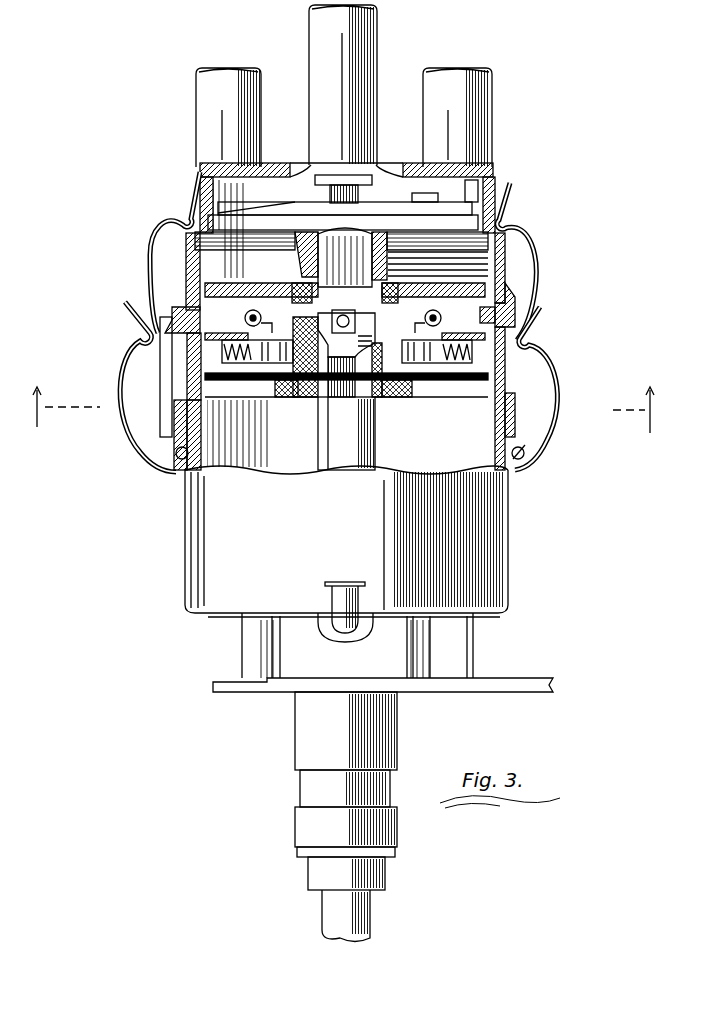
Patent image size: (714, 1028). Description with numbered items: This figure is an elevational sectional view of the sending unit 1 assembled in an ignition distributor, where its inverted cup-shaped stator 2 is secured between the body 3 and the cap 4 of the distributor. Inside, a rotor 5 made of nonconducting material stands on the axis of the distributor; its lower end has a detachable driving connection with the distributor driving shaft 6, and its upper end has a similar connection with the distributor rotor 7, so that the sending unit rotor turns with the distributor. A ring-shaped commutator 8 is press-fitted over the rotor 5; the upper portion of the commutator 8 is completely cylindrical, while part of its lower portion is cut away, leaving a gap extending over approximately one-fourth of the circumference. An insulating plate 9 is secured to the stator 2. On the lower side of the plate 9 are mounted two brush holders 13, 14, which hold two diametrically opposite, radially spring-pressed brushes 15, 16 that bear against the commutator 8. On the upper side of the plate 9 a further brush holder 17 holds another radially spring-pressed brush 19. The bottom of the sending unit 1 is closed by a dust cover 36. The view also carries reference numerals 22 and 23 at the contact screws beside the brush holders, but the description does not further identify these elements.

The sending unit 1 is at (148, 396).
The stator 2 is at (513, 403).
The body 3 is at (483, 538).
The cap 4 is at (495, 282).
The rotor 5 is at (377, 283).
The distributor driving shaft 6 is at (365, 447).
The distributor rotor 7 is at (300, 260).
The commutator 8 is at (322, 313).
The insulating plate 9 is at (197, 333).
The brush holder 13 is at (187, 363).
The brush holder 14 is at (493, 357).
The brush 15 is at (225, 355).
The brush 16 is at (428, 357).
The brush holder 17 is at (356, 308).
The brush 19 is at (352, 340).
The left screw 22 is at (257, 310).
The right screw 23 is at (431, 310).
The dust cover 36 is at (503, 390).